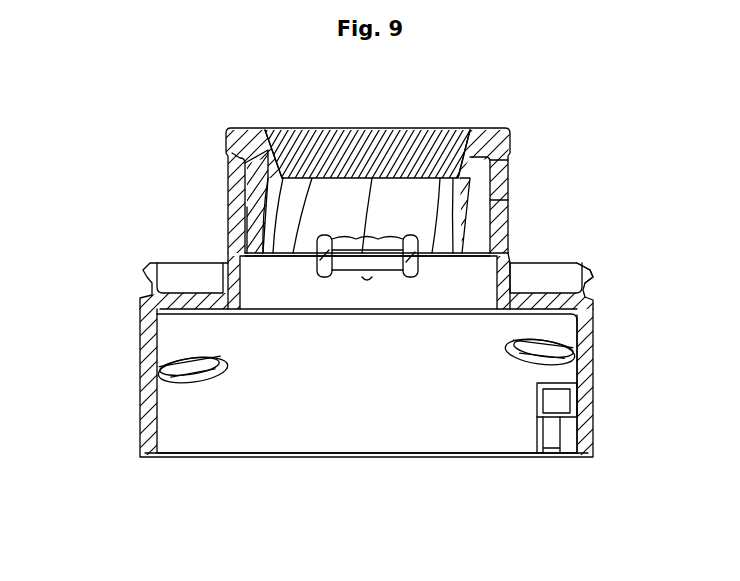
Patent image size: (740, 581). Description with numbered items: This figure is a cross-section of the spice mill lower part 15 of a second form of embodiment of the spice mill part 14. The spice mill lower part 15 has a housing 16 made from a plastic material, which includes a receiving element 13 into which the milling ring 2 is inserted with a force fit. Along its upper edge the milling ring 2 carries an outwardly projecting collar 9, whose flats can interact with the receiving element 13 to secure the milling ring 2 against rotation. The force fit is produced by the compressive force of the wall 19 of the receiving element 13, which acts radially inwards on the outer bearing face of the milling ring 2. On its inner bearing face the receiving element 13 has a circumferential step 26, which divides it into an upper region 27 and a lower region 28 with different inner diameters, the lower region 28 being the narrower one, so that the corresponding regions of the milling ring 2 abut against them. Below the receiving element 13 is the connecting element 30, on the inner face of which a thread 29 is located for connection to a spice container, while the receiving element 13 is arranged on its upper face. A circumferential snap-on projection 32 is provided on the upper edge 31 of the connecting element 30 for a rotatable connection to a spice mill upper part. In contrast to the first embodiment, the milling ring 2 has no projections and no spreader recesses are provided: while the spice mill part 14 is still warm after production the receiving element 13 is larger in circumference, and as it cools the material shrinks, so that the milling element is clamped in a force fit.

The milling ring 2 is at (223, 137).
The collar 9 is at (500, 142).
The wall 19 is at (230, 215).
The circumferential step 26 is at (240, 217).
The upper region 27 is at (500, 170).
The receiving element 13 is at (500, 230).
The lower region 28 is at (572, 250).
The spice mill lower part 15 is at (567, 248).
The snap-on projection 32 is at (598, 270).
The upper edge 31 is at (133, 290).
The housing 16 is at (158, 357).
The connecting element 30 is at (585, 365).
The spice mill part 14 is at (150, 485).
The thread 29 is at (527, 368).